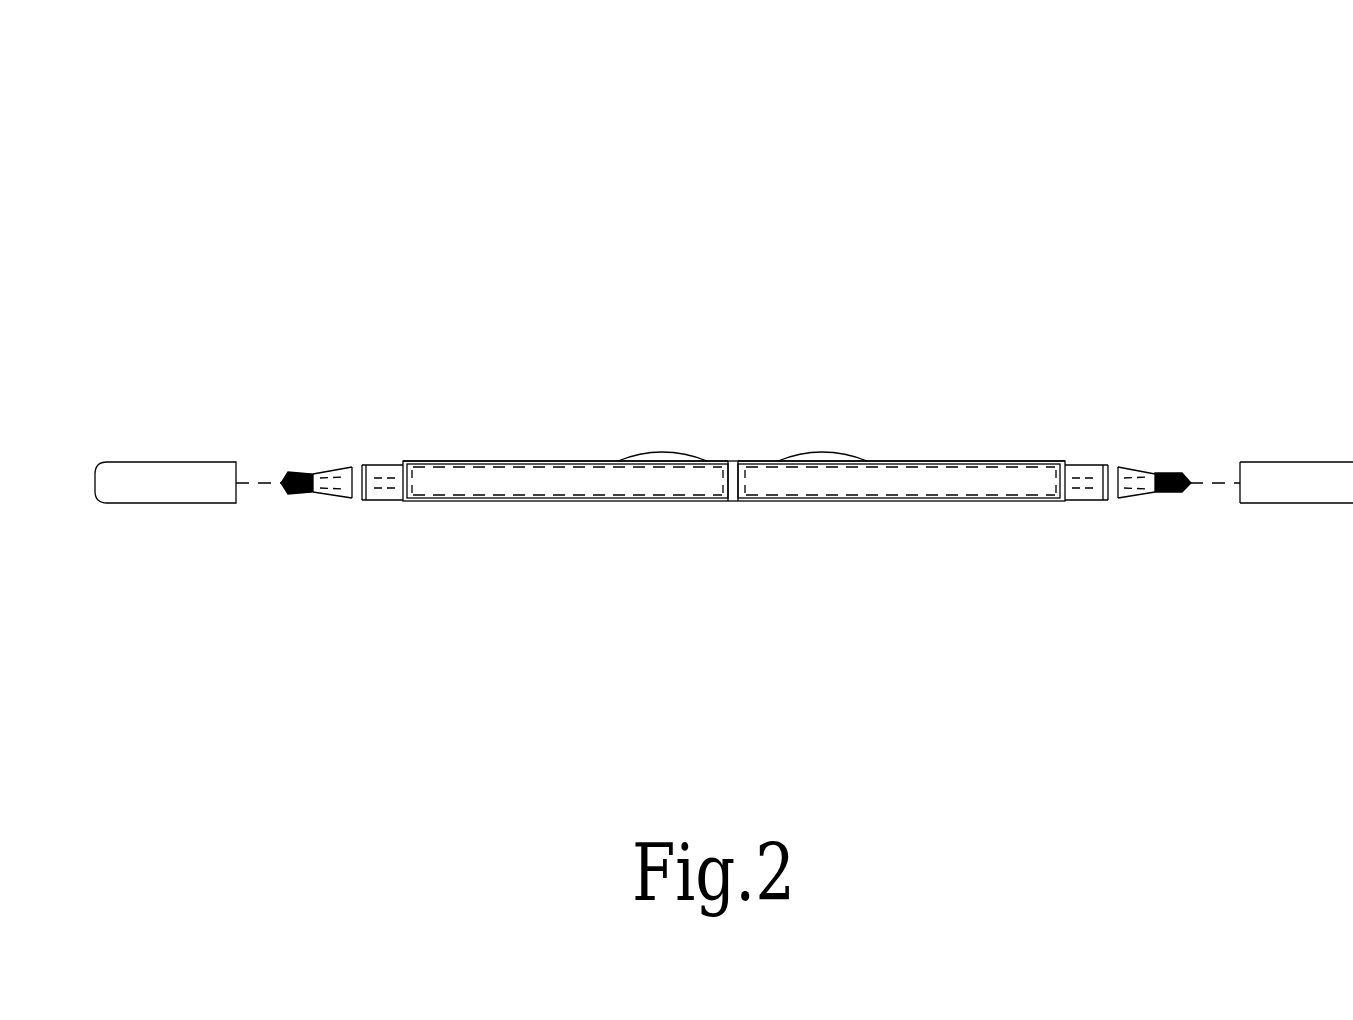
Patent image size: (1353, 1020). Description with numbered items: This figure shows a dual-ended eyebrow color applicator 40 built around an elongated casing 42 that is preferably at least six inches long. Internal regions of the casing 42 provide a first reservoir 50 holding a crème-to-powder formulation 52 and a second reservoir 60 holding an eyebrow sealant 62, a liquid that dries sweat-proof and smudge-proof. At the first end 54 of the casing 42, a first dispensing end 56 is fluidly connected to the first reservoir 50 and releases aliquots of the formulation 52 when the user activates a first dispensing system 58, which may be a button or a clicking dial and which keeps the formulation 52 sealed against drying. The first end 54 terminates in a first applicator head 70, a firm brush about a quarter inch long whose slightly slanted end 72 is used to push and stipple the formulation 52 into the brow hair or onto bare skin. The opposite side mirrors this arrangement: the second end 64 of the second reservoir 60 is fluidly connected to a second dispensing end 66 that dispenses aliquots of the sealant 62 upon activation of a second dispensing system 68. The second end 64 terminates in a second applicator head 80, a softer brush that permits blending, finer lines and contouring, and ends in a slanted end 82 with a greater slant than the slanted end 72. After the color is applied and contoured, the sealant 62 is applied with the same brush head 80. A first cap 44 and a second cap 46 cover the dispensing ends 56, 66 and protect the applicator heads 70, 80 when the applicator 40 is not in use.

The eyebrow color applicator 40 is at (722, 204).
The casing 42 is at (733, 501).
The first cap 44 is at (175, 478).
The second cap 46 is at (1295, 480).
The first reservoir 50 is at (513, 465).
The crème-to-powder formulation 52 is at (572, 478).
The first end 54 is at (417, 436).
The first dispensing end 56 is at (335, 508).
The first dispensing system 58 is at (663, 453).
The second reservoir 60 is at (905, 470).
The eyebrow sealant 62 is at (964, 478).
The second end 64 is at (969, 514).
The second dispensing end 66 is at (1135, 510).
The second dispensing system 68 is at (823, 453).
The first applicator head 70 is at (293, 474).
The slanted end 72 is at (291, 508).
The second applicator head 80 is at (1173, 474).
The slanted end 82 is at (1195, 512).